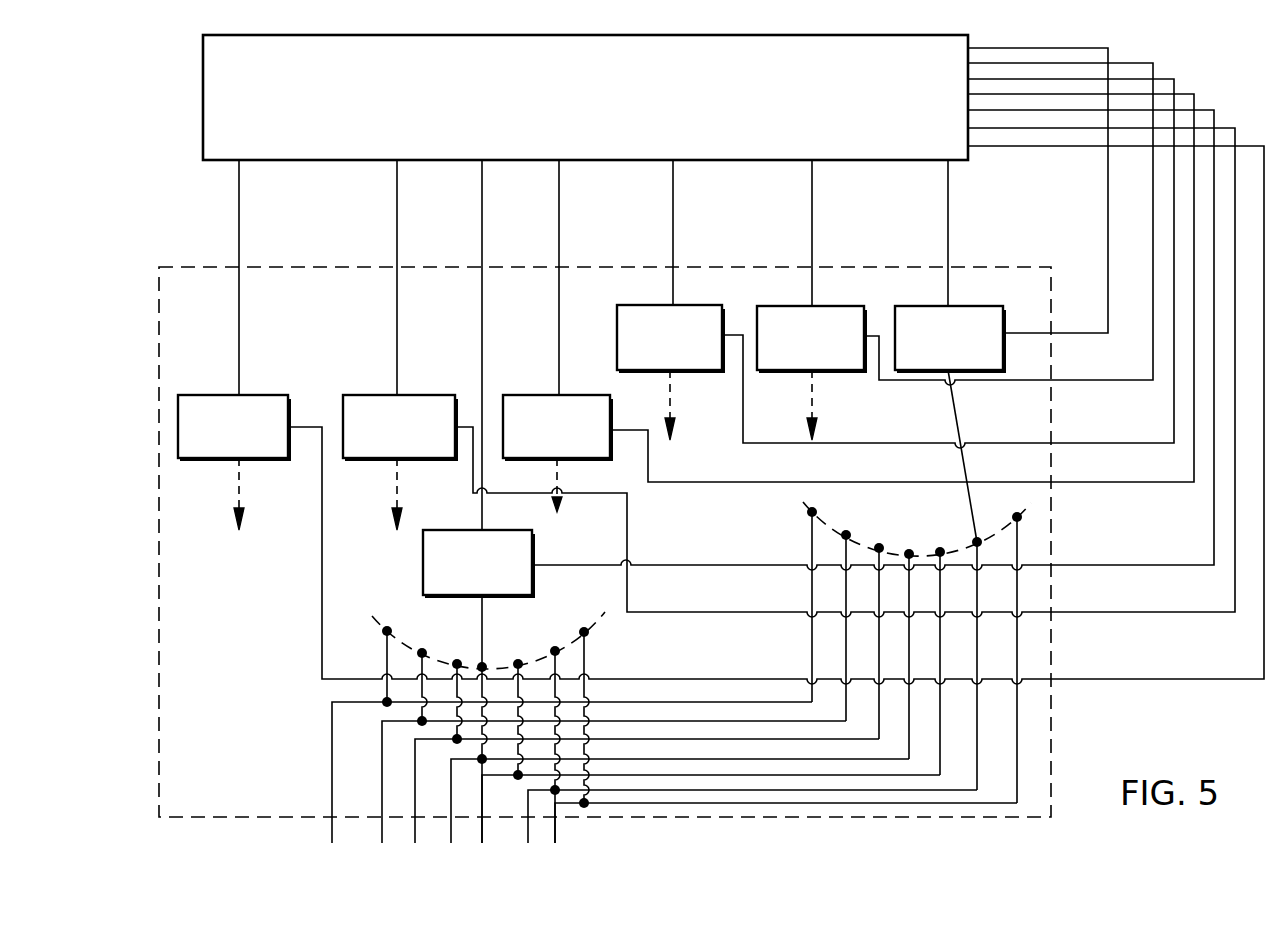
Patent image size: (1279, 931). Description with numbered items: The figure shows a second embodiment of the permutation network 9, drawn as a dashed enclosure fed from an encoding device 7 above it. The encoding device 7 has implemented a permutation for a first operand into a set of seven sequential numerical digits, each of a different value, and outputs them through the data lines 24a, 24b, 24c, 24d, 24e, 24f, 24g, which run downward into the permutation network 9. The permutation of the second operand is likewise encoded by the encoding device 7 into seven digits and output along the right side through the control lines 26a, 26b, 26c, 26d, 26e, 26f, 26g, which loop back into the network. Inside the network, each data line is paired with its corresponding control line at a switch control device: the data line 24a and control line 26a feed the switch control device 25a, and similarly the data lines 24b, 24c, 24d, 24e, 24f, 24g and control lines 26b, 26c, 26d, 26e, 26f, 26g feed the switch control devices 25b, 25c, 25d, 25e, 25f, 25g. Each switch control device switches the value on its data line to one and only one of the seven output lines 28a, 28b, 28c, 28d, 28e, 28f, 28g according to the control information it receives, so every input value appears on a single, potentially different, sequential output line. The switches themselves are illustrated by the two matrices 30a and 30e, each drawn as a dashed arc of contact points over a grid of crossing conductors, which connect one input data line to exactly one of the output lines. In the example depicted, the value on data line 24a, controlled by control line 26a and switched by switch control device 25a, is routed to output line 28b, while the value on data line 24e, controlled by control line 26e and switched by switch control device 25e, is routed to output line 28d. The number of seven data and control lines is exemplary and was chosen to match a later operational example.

The encoding device 7 is at (203, 139).
The permutation network 9 is at (157, 308).
The data line 24a is at (949, 252).
The data line 24b is at (813, 218).
The data line 24c is at (674, 218).
The data line 24d is at (560, 215).
The data line 24e is at (483, 212).
The data line 24f is at (397, 216).
The data line 24g is at (240, 212).
The switch control device 25a is at (968, 305).
The switch control device 25b is at (828, 305).
The switch control device 25c is at (688, 304).
The switch control device 25d is at (550, 393).
The switch control device 25e is at (458, 528).
The switch control device 25f is at (383, 393).
The switch control device 25g is at (232, 393).
The control line 26a is at (1108, 216).
The control line 26b is at (1153, 392).
The control line 26c is at (1174, 447).
The control line 26d is at (1194, 487).
The control line 26e is at (1155, 563).
The control line 26f is at (1170, 616).
The control line 26g is at (1190, 683).
The output line 28a is at (556, 826).
The output line 28b is at (528, 832).
The output line 28c is at (483, 830).
The output line 28d is at (451, 830).
The output line 28e is at (415, 832).
The output line 28f is at (382, 797).
The output line 28g is at (332, 822).
The switch 30a is at (972, 532).
The switch 30e is at (483, 608).